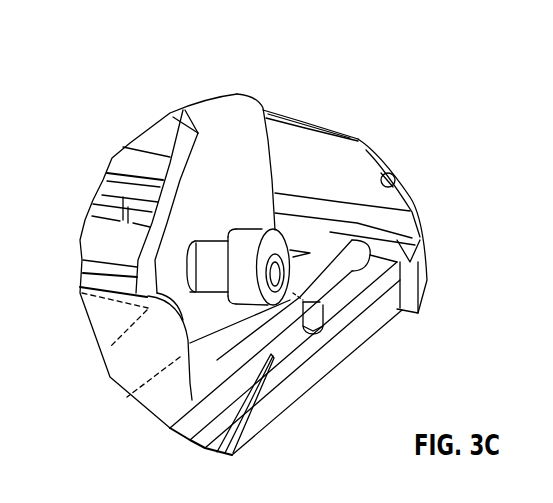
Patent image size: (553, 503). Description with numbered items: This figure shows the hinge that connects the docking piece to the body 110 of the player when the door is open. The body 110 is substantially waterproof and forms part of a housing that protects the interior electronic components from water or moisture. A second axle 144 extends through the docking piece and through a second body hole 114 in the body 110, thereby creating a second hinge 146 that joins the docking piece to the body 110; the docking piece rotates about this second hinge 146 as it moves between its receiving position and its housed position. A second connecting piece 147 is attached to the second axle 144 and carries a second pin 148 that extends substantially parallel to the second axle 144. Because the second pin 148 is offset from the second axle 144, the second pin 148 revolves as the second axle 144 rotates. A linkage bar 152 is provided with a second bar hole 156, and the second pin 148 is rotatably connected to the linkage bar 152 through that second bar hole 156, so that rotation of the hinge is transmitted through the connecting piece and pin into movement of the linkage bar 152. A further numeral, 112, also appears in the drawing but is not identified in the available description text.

The body 110 is at (230, 135).
The base 112 is at (235, 502).
The second body hole 114 is at (204, 234).
The second axle 144 is at (279, 271).
The second hinge 146 is at (383, 339).
The second connecting piece 147 is at (243, 295).
The second pin 148 is at (316, 328).
The linkage bar 152 is at (270, 379).
The second bar hole 156 is at (310, 302).